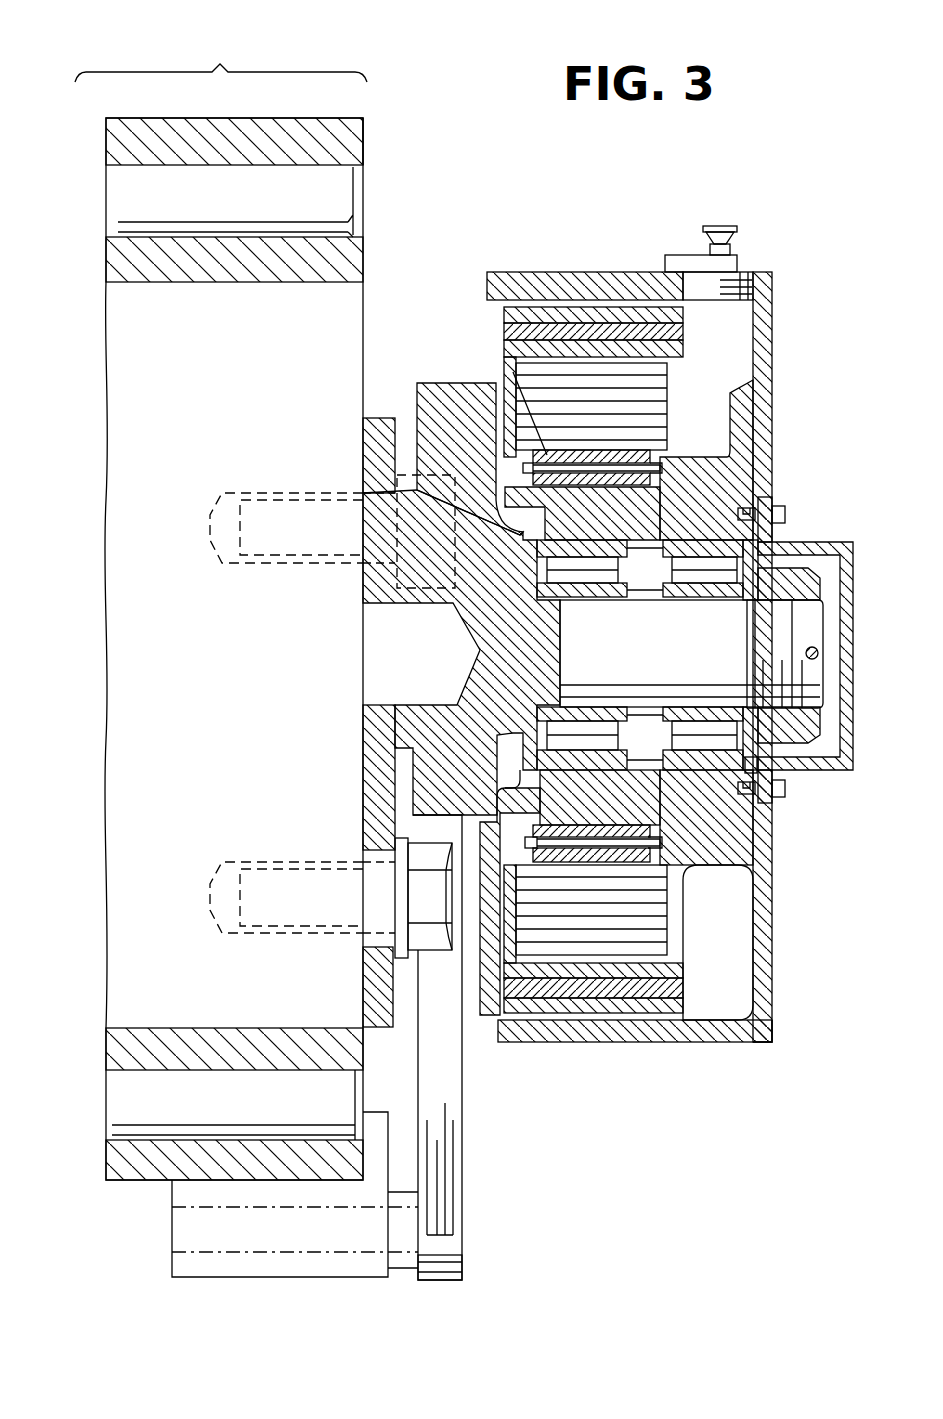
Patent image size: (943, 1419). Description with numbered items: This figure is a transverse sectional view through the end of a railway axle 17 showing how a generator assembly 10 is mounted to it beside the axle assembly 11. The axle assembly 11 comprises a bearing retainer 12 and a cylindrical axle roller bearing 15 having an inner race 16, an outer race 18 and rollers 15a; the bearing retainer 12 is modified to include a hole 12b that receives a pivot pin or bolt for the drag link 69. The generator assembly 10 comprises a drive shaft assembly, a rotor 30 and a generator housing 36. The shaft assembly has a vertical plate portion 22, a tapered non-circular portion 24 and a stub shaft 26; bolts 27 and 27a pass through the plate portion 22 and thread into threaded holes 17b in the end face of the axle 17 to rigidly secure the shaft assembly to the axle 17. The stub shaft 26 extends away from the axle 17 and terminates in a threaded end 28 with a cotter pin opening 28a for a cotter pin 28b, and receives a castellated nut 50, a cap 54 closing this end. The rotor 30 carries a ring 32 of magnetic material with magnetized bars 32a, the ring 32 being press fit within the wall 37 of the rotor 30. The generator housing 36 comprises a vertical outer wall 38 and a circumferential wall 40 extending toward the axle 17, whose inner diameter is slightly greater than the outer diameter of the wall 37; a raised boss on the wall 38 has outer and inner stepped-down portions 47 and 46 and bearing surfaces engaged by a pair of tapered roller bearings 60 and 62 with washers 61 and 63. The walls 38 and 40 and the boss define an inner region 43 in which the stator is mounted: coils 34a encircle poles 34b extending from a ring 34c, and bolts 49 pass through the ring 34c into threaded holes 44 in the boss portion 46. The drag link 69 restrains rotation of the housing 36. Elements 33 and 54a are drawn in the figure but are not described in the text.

The generator assembly 10 is at (609, 261).
The axle assembly 11 is at (270, 70).
The bearing retainer 12 is at (283, 1277).
The hole 12b is at (455, 1262).
The axle roller bearing 15 is at (362, 118).
The rollers 15a is at (342, 201).
The inner race 16 is at (352, 265).
The axle 17 is at (105, 626).
The threaded holes 17b is at (212, 530).
The outer race 18 is at (366, 157).
The vertical plate portion 22 is at (370, 820).
The tapered non-circular portion 24 is at (425, 750).
The stub shaft 26 is at (681, 668).
The bolt 27 is at (432, 950).
The bolt 27a is at (413, 470).
The threaded end 28 is at (803, 623).
The cotter pin opening 28a is at (818, 652).
The cotter pin 28b is at (813, 660).
The rotor 30 is at (479, 337).
The ring 32 is at (669, 334).
The magnetized bars 32a is at (677, 347).
The hub block 33 is at (415, 383).
The coils 34a is at (662, 928).
The poles 34b is at (663, 393).
The ring 34c is at (513, 372).
The generator housing 36 is at (785, 1019).
The wall 37 is at (592, 1010).
The vertical outer wall 38 is at (767, 855).
The circumferential wall 40 is at (758, 1033).
The inner region 43 is at (737, 905).
The threaded holes 44 is at (667, 483).
The inner stepped-down portion 46 is at (707, 457).
The outer stepped-down portion 47 is at (610, 532).
The bolts 49 is at (613, 477).
The castellated nut 50 is at (810, 740).
The cap 54 is at (853, 738).
The cap bolts 54a is at (785, 513).
The tapered roller bearing 60 is at (597, 772).
The washer 61 is at (572, 771).
The tapered roller bearing 62 is at (712, 770).
The washer 63 is at (755, 766).
The drag link 69 is at (462, 1165).